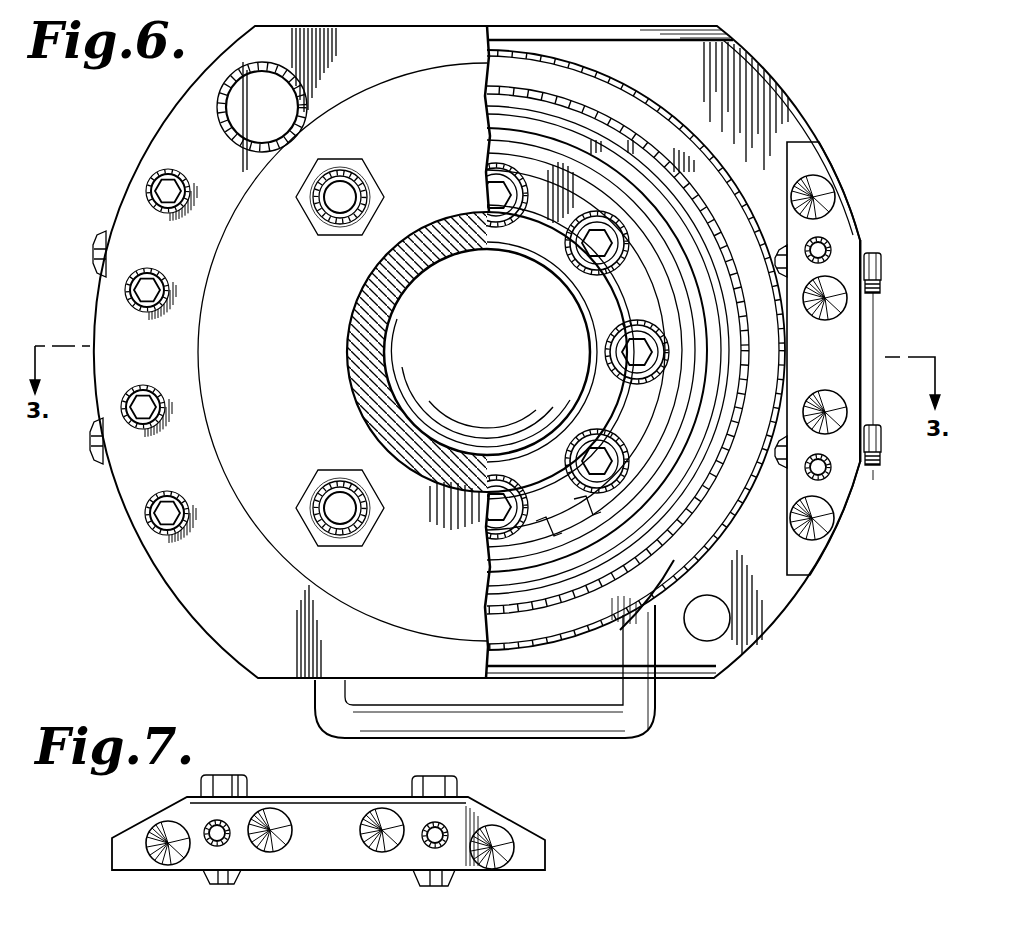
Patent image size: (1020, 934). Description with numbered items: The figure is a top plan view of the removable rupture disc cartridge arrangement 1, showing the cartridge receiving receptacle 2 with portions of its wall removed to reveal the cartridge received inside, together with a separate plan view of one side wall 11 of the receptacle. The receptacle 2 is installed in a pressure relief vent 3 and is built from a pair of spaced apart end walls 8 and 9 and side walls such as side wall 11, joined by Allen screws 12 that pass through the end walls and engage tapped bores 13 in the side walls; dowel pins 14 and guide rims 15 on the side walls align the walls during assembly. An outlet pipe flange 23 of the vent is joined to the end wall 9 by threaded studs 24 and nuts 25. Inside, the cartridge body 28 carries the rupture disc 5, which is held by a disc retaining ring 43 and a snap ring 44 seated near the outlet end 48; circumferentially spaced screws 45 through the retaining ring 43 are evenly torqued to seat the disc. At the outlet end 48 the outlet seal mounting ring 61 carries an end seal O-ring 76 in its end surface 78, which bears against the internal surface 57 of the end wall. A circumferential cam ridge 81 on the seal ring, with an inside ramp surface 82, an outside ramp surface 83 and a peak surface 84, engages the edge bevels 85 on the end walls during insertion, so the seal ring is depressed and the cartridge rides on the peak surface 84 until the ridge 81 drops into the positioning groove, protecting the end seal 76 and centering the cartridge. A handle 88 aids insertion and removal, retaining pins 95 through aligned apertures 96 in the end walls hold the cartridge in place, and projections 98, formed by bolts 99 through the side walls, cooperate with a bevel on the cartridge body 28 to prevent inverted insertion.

In FIG. 6, the removable rupture disc cartridge arrangement 1 is at (858, 103).
In FIG. 6, the cartridge receiving receptacle 2 is at (772, 66).
In FIG. 6, the pressure relief vent 3 is at (380, 326).
In FIG. 6, the rupture disc 5 is at (435, 381).
In FIG. 6, the end wall 8 is at (777, 101).
In FIG. 6, the end wall 9 is at (185, 587).
In FIG. 6, the side wall 11 is at (840, 492).
In FIG. 7, the side wall 11 is at (546, 851).
In FIG. 6, the Allen screws 12 is at (157, 268).
In FIG. 6, the tapped bores 13 is at (797, 200).
In FIG. 7, the tapped bores 13 is at (167, 843).
In FIG. 6, the dowel pins 14 is at (826, 244).
In FIG. 7, the dowel pins 14 is at (207, 828).
In FIG. 7, the guide rims 15 is at (317, 796).
In FIG. 6, the outlet pipe flange 23 is at (342, 352).
In FIG. 6, the threaded studs 24 is at (338, 190).
In FIG. 6, the nuts 25 is at (318, 208).
In FIG. 6, the cartridge body 28 is at (537, 143).
In FIG. 6, the disc retaining ring 43 is at (532, 250).
In FIG. 6, the snap ring 44 is at (583, 510).
In FIG. 6, the screws 45 is at (606, 270).
In FIG. 6, the outlet end 48 is at (690, 401).
In FIG. 6, the internal surface 57 is at (780, 600).
In FIG. 6, the outlet seal mounting ring 61 is at (602, 90).
In FIG. 6, the end seal O-ring 76 is at (520, 112).
In FIG. 6, the end surface 78 is at (500, 588).
In FIG. 6, the cam ridge 81 is at (663, 122).
In FIG. 6, the inside circumferential ramp surface 82 is at (623, 120).
In FIG. 6, the outside circumferential ramp surface 83 is at (696, 152).
In FIG. 6, the peak surface 84 is at (662, 588).
In FIG. 6, the edge bevels 85 is at (529, 34).
In FIG. 6, the handle 88 is at (633, 735).
In FIG. 6, the retaining pins 95 is at (252, 62).
In FIG. 6, the aligned apertures 96 is at (710, 597).
In FIG. 6, the projections 98 is at (783, 248).
In FIG. 7, the projections 98 is at (232, 882).
In FIG. 6, the bolts 99 is at (92, 233).
In FIG. 7, the bolts 99 is at (228, 774).